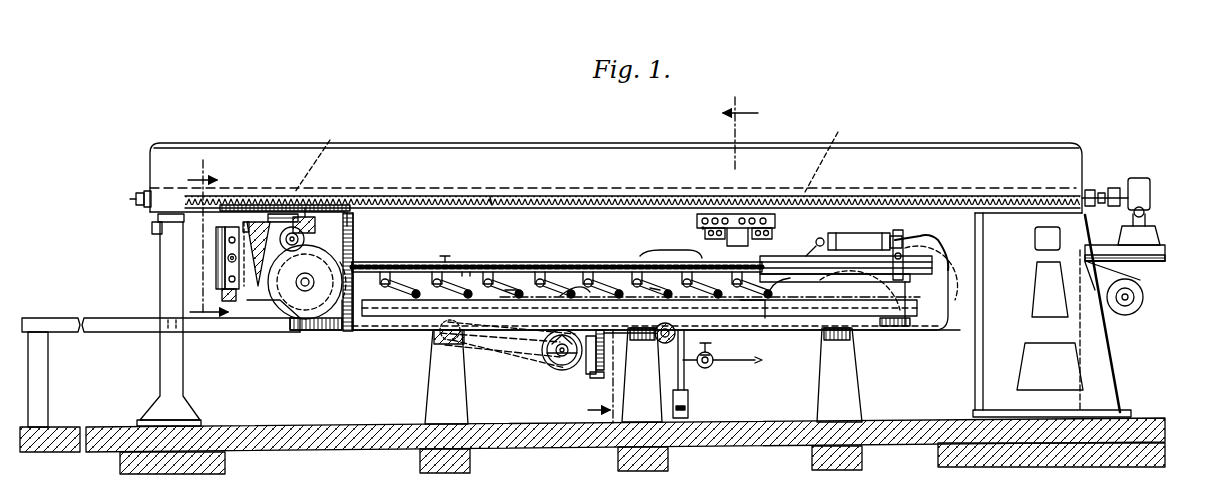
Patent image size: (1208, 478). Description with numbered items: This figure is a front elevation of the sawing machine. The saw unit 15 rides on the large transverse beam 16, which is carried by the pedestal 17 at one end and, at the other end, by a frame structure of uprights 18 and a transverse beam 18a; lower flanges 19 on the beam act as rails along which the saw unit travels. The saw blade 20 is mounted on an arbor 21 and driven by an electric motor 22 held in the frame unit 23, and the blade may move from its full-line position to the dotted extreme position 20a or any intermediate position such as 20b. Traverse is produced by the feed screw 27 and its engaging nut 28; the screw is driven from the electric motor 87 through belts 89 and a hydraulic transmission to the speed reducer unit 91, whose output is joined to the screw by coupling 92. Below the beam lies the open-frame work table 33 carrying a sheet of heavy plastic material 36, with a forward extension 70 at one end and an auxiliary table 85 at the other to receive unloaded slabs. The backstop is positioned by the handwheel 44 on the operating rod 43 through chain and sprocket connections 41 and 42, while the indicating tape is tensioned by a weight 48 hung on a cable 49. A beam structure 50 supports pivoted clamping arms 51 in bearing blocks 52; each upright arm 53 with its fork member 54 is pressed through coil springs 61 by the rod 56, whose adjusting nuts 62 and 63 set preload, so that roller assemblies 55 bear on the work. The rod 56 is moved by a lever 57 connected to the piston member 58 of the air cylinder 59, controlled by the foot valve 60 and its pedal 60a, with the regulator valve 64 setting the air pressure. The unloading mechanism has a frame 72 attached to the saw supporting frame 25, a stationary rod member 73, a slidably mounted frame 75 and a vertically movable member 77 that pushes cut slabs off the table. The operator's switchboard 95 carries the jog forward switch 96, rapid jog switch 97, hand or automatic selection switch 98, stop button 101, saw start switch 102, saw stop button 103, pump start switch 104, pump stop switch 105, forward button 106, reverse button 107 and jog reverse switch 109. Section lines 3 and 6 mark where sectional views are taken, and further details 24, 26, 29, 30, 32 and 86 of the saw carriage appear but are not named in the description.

The section line 3- 3 is at (671, 261).
The section line 6- 6 is at (207, 236).
The saw unit 15 is at (368, 247).
The large transverse beam 16 is at (462, 146).
The pedestal 17 is at (1092, 348).
The uprights 18 is at (159, 265).
The transverse beam 18a is at (153, 235).
The lower flanges 19 is at (490, 200).
The saw blade 20 is at (292, 284).
The dotted outline of saw 20a is at (948, 300).
The intermediate saw position 20b is at (890, 330).
The arbor 21 is at (305, 292).
The electric motor 22 is at (278, 262).
The frame unit 23 is at (262, 260).
The end plate 24 is at (355, 252).
The saw supporting frame 25 is at (365, 216).
The rack 26 is at (371, 205).
The feed screw 27 is at (828, 154).
The engaging nut 28 is at (322, 157).
The bearing block 29 is at (278, 214).
The gear 30 is at (305, 243).
The nut 32 is at (312, 229).
The work table 33 is at (422, 314).
The sheet of heavy plastic material 36 is at (435, 308).
The chain and sprocket connection 41 is at (512, 352).
The chain and sprocket connection 42 is at (584, 358).
The rotatable operating rod 43 is at (548, 352).
The handwheel 44 is at (558, 358).
The weight 48 is at (594, 378).
The cable 49 is at (620, 362).
The beam structure 50 is at (773, 258).
The clamping arms 51 is at (682, 289).
The bearing blocks 52 is at (512, 286).
The upright arm 53 is at (662, 285).
The fork member 54 is at (671, 247).
The roller assembly 55 is at (468, 296).
The rod 56 is at (787, 270).
The lever 57 is at (918, 236).
The piston member 58 is at (880, 240).
The air cylinder 59 is at (848, 233).
The foot valve 60 is at (688, 392).
The pedal 60a is at (688, 407).
The coil springs 61 is at (520, 264).
The adjusting nut 62 is at (468, 264).
The adjusting nut 63 is at (445, 262).
The regulator valve 64 is at (712, 353).
The forward extension 70 is at (762, 320).
The frame 72 is at (228, 256).
The stationary rod member 73 is at (226, 238).
The slidably mounted frame 75 is at (226, 265).
The vertically movable member 77 is at (226, 228).
The auxiliary table 85 is at (138, 332).
The block 86 is at (222, 296).
The electric motor 87 is at (1143, 302).
The belts 89 is at (1160, 258).
The speed reducer unit 91 is at (1139, 178).
The coupling 92 is at (1110, 188).
The operator's switchboard 95 is at (703, 226).
The jog forward switch 96 is at (714, 217).
The rapid jog switch 97 is at (724, 217).
The hand or automatic selection switch 98 is at (753, 217).
The stop button 101 is at (764, 217).
The saw start switch 102 is at (712, 240).
The stop button 103 is at (724, 238).
The pump start switch 104 is at (760, 240).
The pump stop switch 105 is at (774, 226).
The forward button 106 is at (697, 221).
The reverse button 107 is at (703, 218).
The jog reverse switch 109 is at (742, 217).